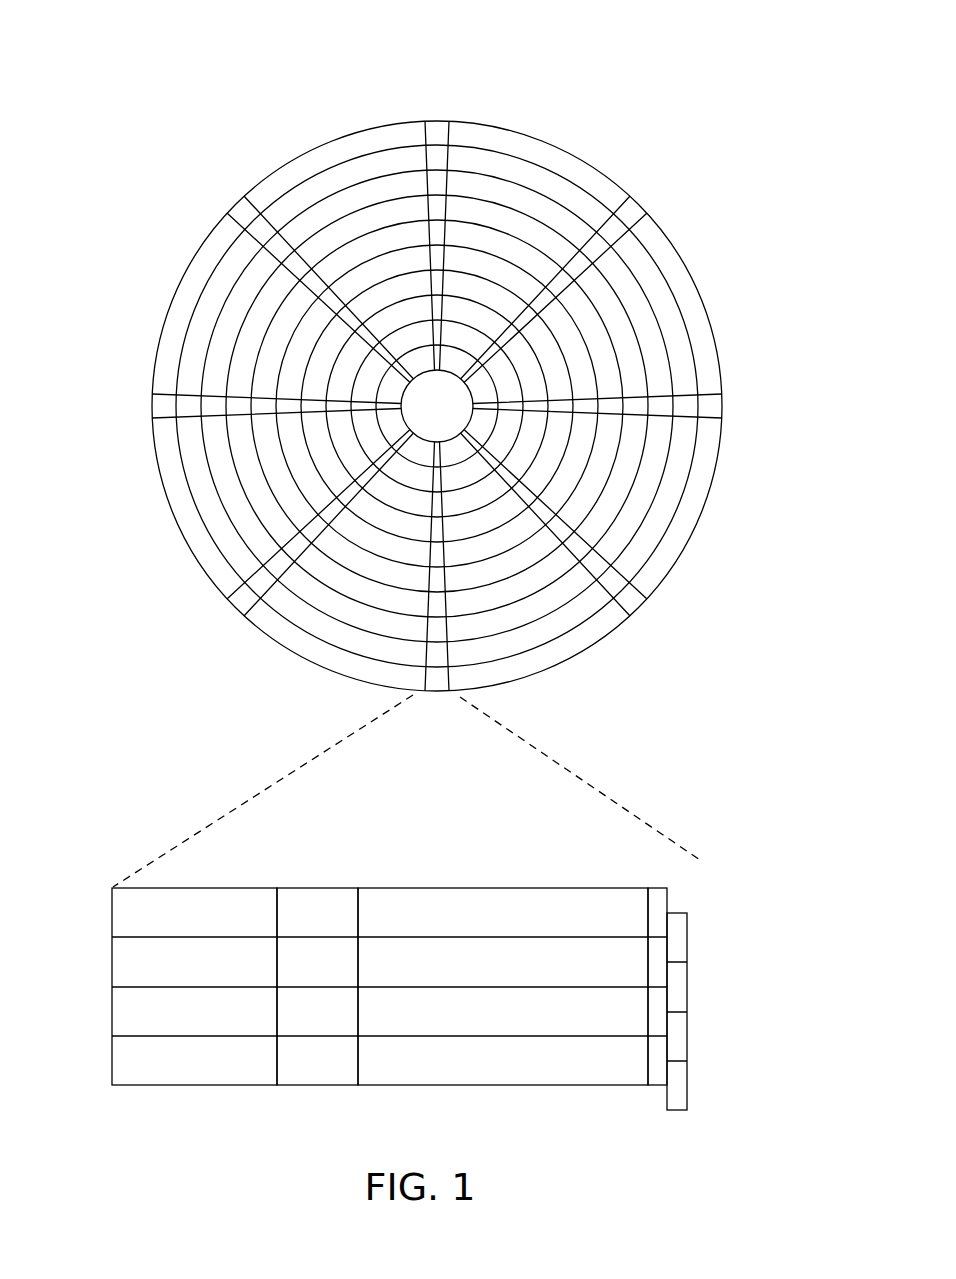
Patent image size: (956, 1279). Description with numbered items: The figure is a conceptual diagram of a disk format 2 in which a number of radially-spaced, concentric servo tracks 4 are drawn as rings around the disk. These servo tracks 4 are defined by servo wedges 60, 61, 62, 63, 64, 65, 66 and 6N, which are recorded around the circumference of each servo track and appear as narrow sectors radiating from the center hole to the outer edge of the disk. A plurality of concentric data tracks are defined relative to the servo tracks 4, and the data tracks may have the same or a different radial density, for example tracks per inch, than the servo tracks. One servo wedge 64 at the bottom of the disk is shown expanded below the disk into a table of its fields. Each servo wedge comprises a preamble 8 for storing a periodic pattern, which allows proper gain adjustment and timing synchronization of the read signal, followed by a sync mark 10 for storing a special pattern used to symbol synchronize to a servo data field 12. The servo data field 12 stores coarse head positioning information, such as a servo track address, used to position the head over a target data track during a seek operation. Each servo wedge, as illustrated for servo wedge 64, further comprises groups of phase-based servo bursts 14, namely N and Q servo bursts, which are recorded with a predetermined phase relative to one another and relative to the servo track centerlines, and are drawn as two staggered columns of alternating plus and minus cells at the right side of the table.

The disk format 2 is at (427, 356).
The servo tracks 4 is at (528, 176).
The servo wedge 60 is at (438, 127).
The servo wedge 61 is at (636, 210).
The servo wedge 62 is at (722, 406).
The servo wedge 63 is at (636, 604).
The servo wedge 64 is at (256, 793).
The servo wedge 65 is at (240, 600).
The servo wedge 66 is at (158, 406).
The servo wedge 6N is at (240, 210).
The preamble 8 is at (222, 887).
The sync mark 10 is at (318, 887).
The servo data field 12 is at (500, 887).
The servo bursts 14 is at (691, 888).